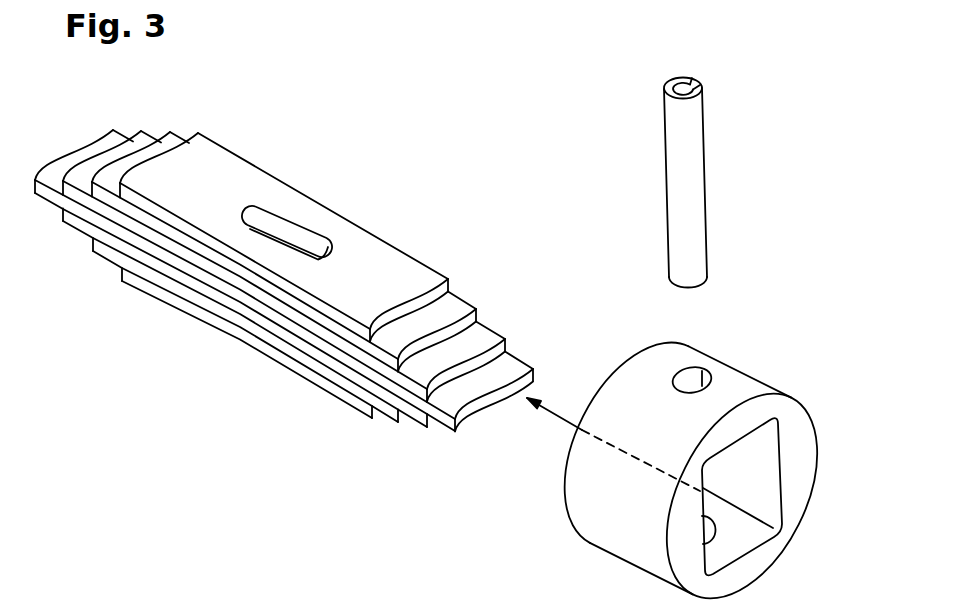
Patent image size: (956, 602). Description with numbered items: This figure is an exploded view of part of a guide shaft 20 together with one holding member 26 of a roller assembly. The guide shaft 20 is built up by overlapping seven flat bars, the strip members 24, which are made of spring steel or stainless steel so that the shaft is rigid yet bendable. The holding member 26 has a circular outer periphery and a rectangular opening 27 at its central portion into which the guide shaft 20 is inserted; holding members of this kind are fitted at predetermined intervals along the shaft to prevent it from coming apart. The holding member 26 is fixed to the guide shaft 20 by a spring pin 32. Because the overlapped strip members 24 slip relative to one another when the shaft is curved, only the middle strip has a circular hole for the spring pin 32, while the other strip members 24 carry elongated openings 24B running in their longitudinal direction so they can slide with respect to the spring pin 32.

The guide shaft 20 is at (311, 312).
The strip member 24 is at (395, 265).
The elongated opening 24B is at (270, 213).
The holding member 26 is at (682, 472).
The rectangular opening 27 is at (727, 543).
The spring pin 32 is at (695, 220).